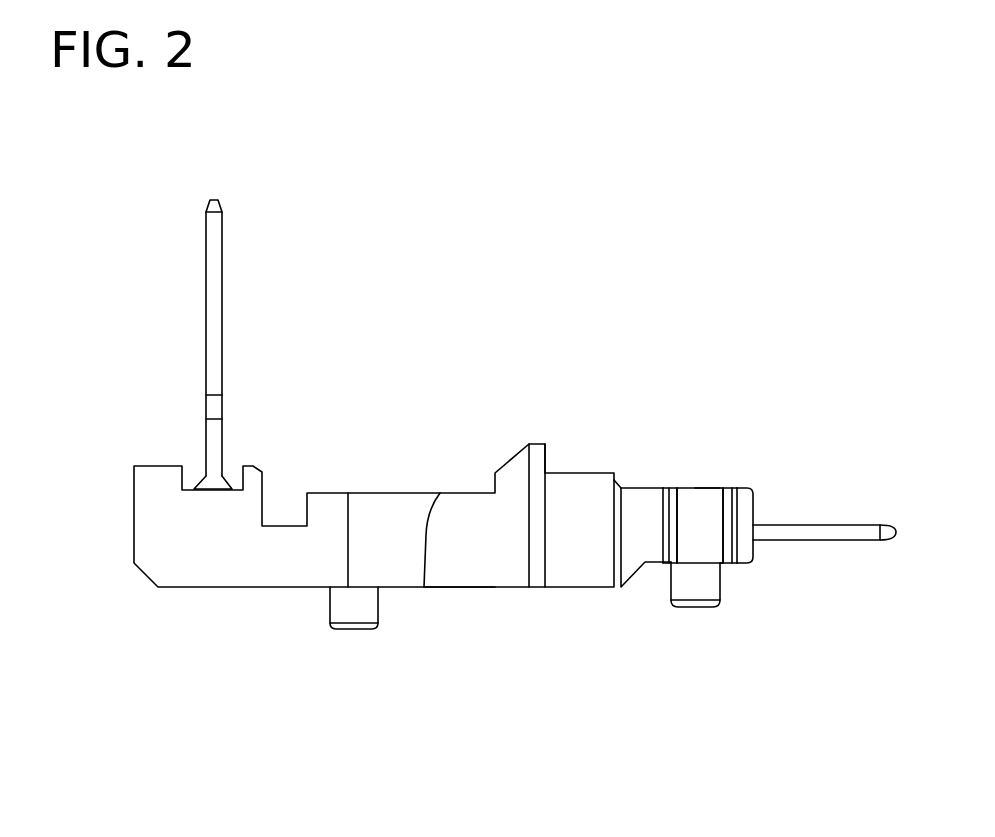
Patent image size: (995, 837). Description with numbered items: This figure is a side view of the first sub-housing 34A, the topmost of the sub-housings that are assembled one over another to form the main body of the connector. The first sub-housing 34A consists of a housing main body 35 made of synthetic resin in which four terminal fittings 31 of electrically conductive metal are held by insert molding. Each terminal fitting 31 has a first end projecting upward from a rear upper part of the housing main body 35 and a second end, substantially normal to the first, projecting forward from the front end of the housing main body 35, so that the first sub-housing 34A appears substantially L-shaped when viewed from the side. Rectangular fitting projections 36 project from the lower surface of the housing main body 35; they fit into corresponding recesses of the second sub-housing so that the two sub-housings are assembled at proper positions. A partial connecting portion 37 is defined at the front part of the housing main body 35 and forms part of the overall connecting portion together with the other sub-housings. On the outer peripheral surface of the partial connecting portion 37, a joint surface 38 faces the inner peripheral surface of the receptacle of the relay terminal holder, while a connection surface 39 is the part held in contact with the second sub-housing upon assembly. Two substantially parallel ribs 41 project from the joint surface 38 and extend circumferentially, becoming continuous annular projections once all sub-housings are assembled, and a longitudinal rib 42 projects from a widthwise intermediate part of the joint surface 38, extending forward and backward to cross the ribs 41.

The terminal fitting 31 is at (208, 265).
The first sub-housing 34A is at (369, 360).
The housing main body 35 is at (461, 507).
The fitting projection 36 is at (352, 620).
The partial connecting portion 37 is at (642, 473).
The joint surface 38 is at (695, 497).
The connection surface 39 is at (727, 565).
The rib 41 is at (670, 493).
The longitudinal rib 42 is at (708, 487).